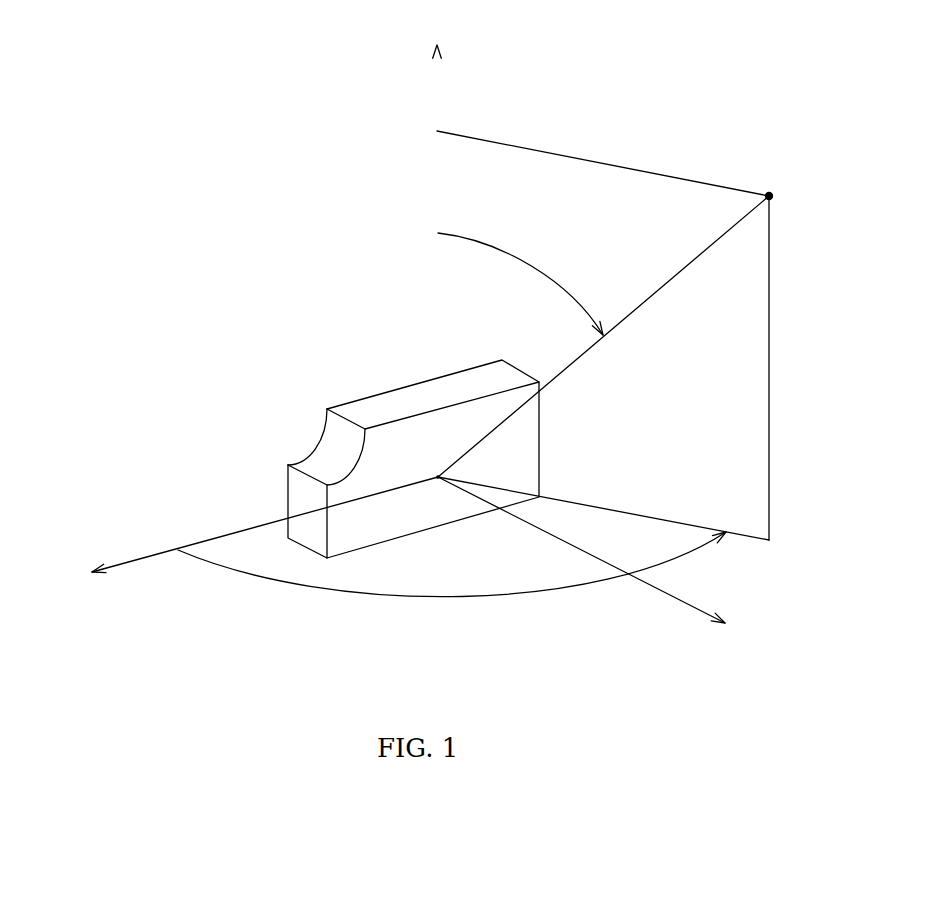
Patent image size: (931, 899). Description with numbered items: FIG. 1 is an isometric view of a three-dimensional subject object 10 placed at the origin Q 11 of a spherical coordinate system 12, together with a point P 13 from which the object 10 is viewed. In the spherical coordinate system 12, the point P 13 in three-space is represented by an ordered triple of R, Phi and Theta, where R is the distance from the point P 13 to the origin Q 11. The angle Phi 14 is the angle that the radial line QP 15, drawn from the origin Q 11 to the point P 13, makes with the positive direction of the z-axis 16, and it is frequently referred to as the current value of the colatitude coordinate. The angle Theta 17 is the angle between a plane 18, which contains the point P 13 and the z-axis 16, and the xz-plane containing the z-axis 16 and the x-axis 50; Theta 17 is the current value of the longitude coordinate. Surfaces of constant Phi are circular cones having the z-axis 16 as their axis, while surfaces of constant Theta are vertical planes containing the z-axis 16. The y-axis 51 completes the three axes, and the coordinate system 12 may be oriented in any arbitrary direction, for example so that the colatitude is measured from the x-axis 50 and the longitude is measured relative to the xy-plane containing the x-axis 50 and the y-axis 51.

The subject object 10 is at (395, 390).
The origin Q 11 is at (436, 481).
The spherical coordinate system 12 is at (533, 650).
The point P 13 is at (775, 197).
The angle Phi 14 is at (468, 242).
The radial line QP 15 is at (643, 302).
The z-axis 16 is at (437, 88).
The angle Theta 17 is at (332, 596).
The plane 18 is at (769, 361).
The x-axis 50 is at (138, 560).
The y-axis 51 is at (686, 603).